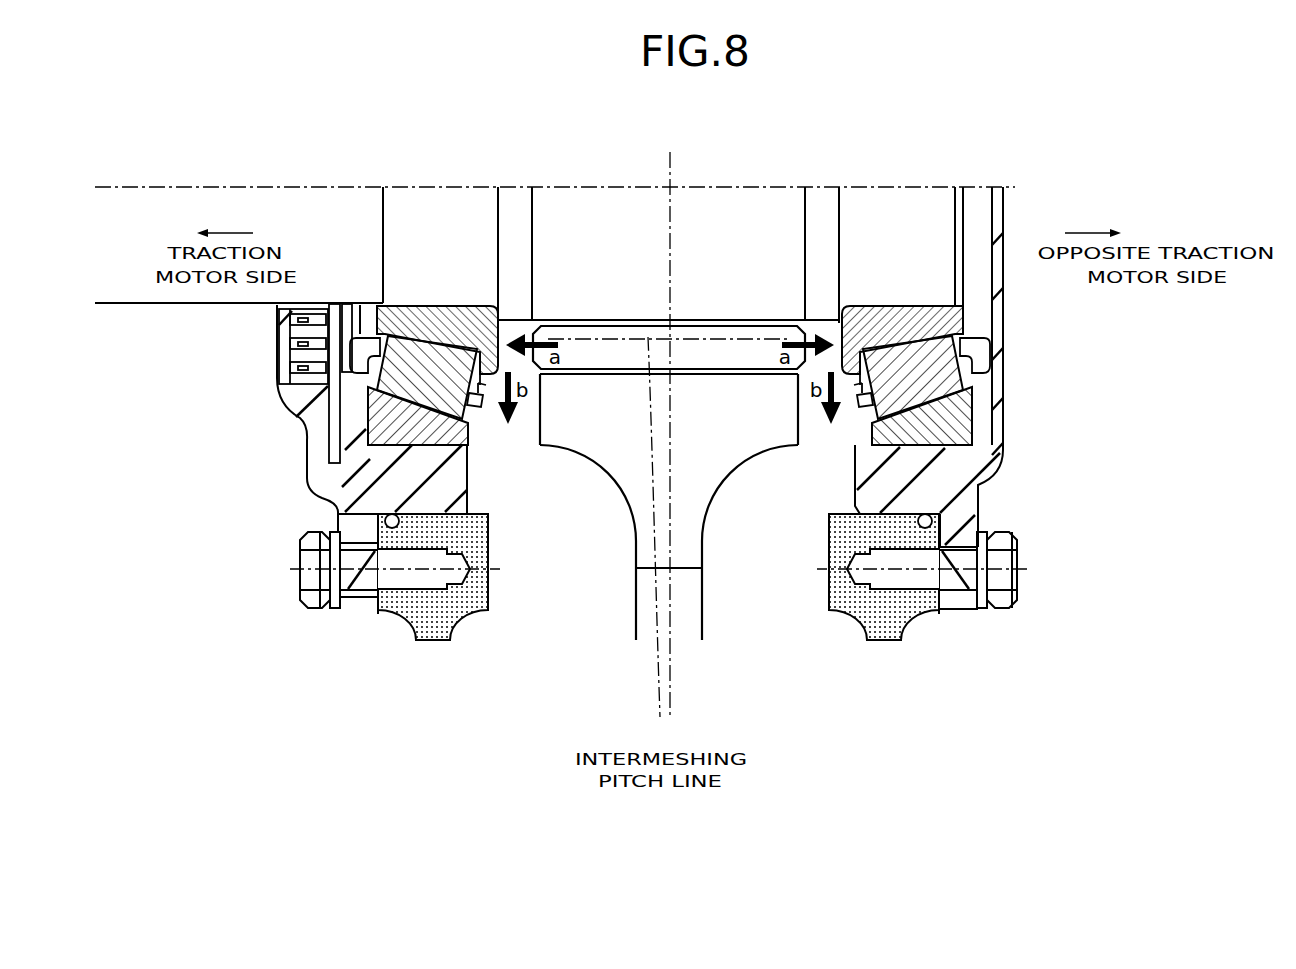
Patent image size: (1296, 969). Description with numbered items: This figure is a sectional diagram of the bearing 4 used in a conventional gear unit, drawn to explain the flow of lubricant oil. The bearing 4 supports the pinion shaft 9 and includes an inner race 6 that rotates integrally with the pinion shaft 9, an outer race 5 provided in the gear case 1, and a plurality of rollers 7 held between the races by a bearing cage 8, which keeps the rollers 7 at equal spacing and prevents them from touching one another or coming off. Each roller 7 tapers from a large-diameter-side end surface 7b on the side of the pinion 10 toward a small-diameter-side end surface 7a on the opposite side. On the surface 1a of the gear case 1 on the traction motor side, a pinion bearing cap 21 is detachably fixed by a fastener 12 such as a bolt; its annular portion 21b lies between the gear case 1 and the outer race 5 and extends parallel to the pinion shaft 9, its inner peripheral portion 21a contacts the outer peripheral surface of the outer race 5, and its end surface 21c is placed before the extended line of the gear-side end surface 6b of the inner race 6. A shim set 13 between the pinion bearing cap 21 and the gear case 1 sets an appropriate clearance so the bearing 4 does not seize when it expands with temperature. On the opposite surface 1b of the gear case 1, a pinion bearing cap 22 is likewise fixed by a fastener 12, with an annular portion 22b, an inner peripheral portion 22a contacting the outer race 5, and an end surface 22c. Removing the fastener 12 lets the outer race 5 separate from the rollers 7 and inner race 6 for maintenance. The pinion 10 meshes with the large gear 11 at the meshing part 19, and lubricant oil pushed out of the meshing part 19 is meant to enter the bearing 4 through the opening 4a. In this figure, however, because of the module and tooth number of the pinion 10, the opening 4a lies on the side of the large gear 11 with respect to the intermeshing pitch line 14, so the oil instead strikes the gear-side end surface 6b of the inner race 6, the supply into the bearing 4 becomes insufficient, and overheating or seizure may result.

The gear case 1 is at (470, 622).
The surface of the gear case on the traction motor side 1a is at (420, 642).
The surface of the gear case opposite to the traction motor side 1b is at (895, 642).
The bearing 4 is at (352, 396).
The opening 4a is at (485, 423).
The outer race 5 is at (380, 428).
The inner race 6 is at (414, 312).
The gear-side end surface of the inner race 6b is at (513, 318).
The roller 7 is at (390, 380).
The small-diameter-side end surface 7a is at (357, 343).
The large-diameter-side end surface 7b is at (468, 412).
The bearing cage 8 is at (380, 353).
The pinion shaft 9 is at (140, 205).
The pinion 10 is at (601, 217).
The large gear 11 is at (627, 477).
The fastener 12 is at (316, 596).
The shim set 13 is at (388, 615).
The intermeshing pitch line 14 is at (661, 542).
The meshing part 19 is at (713, 395).
The pinion bearing cap 21 is at (332, 492).
The inner peripheral portion 21a is at (380, 473).
The annular portion 21b is at (336, 512).
The end surface 21c is at (300, 586).
The pinion bearing cap 22 is at (1000, 468).
The inner peripheral portion 22a is at (893, 482).
The annular portion 22b is at (980, 545).
The end surface 22c is at (1017, 586).